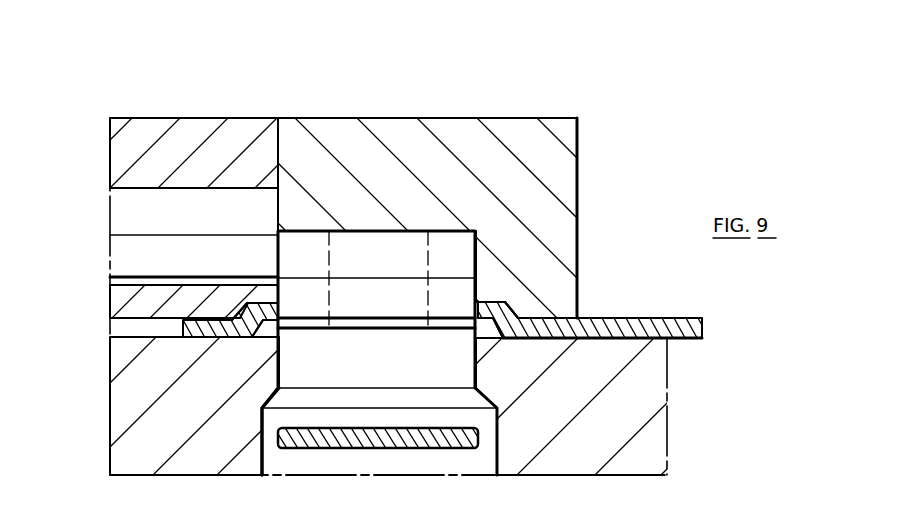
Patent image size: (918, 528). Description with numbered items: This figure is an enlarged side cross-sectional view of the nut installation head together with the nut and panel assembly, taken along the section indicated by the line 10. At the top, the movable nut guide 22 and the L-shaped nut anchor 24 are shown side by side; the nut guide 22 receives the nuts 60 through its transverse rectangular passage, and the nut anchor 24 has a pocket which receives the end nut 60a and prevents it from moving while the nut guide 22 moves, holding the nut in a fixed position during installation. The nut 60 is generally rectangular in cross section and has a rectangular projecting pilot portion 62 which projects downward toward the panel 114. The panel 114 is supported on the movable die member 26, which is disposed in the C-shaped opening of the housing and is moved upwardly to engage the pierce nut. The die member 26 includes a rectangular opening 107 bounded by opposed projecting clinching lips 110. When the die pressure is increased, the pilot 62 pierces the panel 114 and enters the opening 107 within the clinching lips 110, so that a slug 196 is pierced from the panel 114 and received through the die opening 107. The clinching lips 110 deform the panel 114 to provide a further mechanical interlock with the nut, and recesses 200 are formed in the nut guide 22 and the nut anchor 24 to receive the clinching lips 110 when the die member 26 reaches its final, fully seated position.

The section line 10- 10 is at (387, 140).
The movable nut guide 22 is at (148, 128).
The nut anchor 24 is at (579, 176).
The movable die member 26 is at (668, 375).
The nut 60 is at (120, 208).
The end nut 60a is at (403, 266).
The pilot portion 62 is at (112, 278).
The rectangular opening 107 is at (265, 462).
The clinching lips 110 is at (268, 328).
The panel 114 is at (668, 316).
The slug 196 is at (442, 440).
The recesses 200 is at (263, 303).